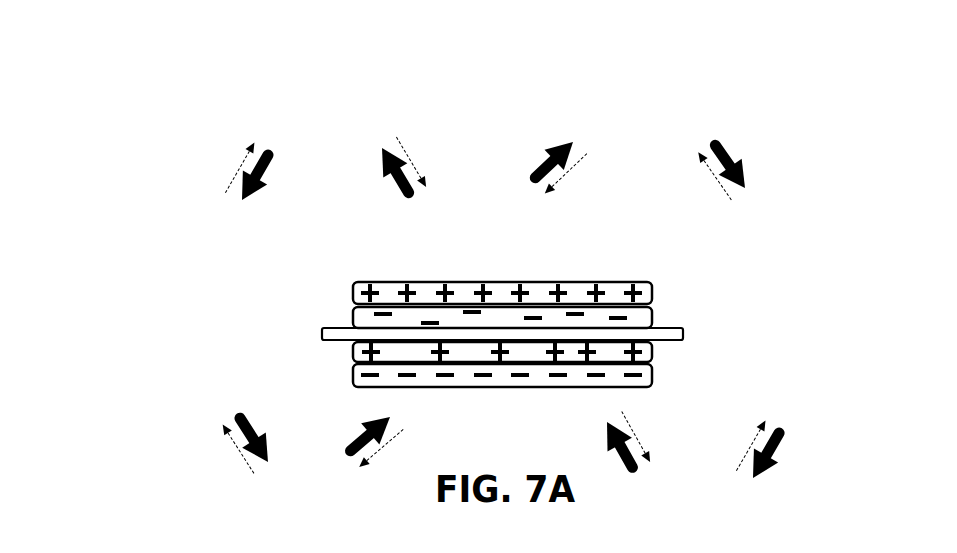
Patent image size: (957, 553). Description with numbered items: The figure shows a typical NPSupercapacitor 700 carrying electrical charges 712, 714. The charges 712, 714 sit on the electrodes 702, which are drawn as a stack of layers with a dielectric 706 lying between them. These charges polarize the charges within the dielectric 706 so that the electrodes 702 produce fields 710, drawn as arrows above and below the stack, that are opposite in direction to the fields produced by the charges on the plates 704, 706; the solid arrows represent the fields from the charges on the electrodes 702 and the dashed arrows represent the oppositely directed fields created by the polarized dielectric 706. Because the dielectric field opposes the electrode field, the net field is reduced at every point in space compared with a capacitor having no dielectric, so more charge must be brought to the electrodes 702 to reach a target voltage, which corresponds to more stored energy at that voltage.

The NPSupercapacitor 700 is at (104, 84).
The electrodes 702 is at (352, 374).
The plates 704 is at (600, 328).
The dielectric 706 is at (652, 317).
The fields 710 is at (740, 150).
The electrical charges 712 is at (373, 296).
The electrical charges 714 is at (445, 376).